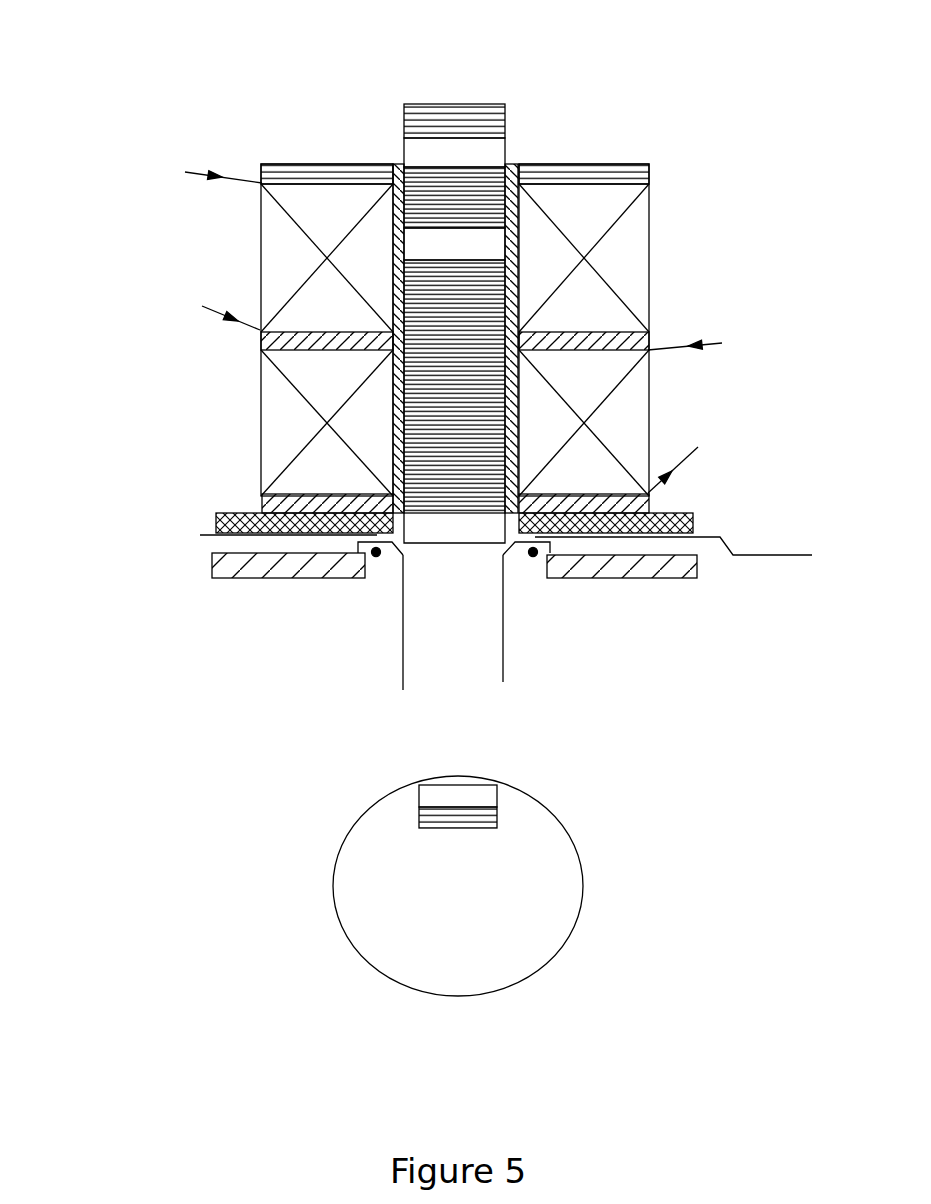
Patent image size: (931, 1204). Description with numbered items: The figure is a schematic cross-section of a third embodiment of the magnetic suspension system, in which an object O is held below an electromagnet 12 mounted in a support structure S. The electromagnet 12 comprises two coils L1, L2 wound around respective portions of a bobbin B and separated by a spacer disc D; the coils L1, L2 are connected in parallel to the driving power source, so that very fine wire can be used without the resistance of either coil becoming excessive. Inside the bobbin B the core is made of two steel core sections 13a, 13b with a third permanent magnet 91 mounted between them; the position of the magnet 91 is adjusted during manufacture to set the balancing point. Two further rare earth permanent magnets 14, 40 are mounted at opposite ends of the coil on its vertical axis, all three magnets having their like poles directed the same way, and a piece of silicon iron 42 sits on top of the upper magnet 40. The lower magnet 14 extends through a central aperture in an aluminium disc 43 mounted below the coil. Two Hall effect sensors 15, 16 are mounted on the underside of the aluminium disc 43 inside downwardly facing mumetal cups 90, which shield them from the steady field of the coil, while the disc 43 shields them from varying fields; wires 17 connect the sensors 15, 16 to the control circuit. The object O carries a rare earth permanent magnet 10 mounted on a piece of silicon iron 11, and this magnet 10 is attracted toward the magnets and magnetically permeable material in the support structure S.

The piece of silicon iron 42 is at (475, 118).
The upper rare earth permanent magnet 40 is at (483, 152).
The steel core section 13b is at (440, 197).
The third permanent magnet 91 is at (437, 245).
The electromagnet 12 is at (630, 233).
The steel core section 13a is at (460, 382).
The lower rare earth permanent magnet 14 is at (455, 533).
The aluminium disc 43 is at (682, 517).
The wires 17 is at (521, 551).
The Hall effect sensor 15 is at (376, 556).
The Hall effect sensor 16 is at (533, 556).
The mumetal cups 90 is at (459, 636).
The rare earth permanent magnet 10 is at (475, 795).
The piece of silicon iron 11 is at (480, 819).
The spacer disc D is at (273, 342).
The bobbin B is at (278, 502).
The support structure S is at (290, 567).
The first coil L1 is at (740, 303).
The second coil L2 is at (142, 348).
The object O is at (328, 880).